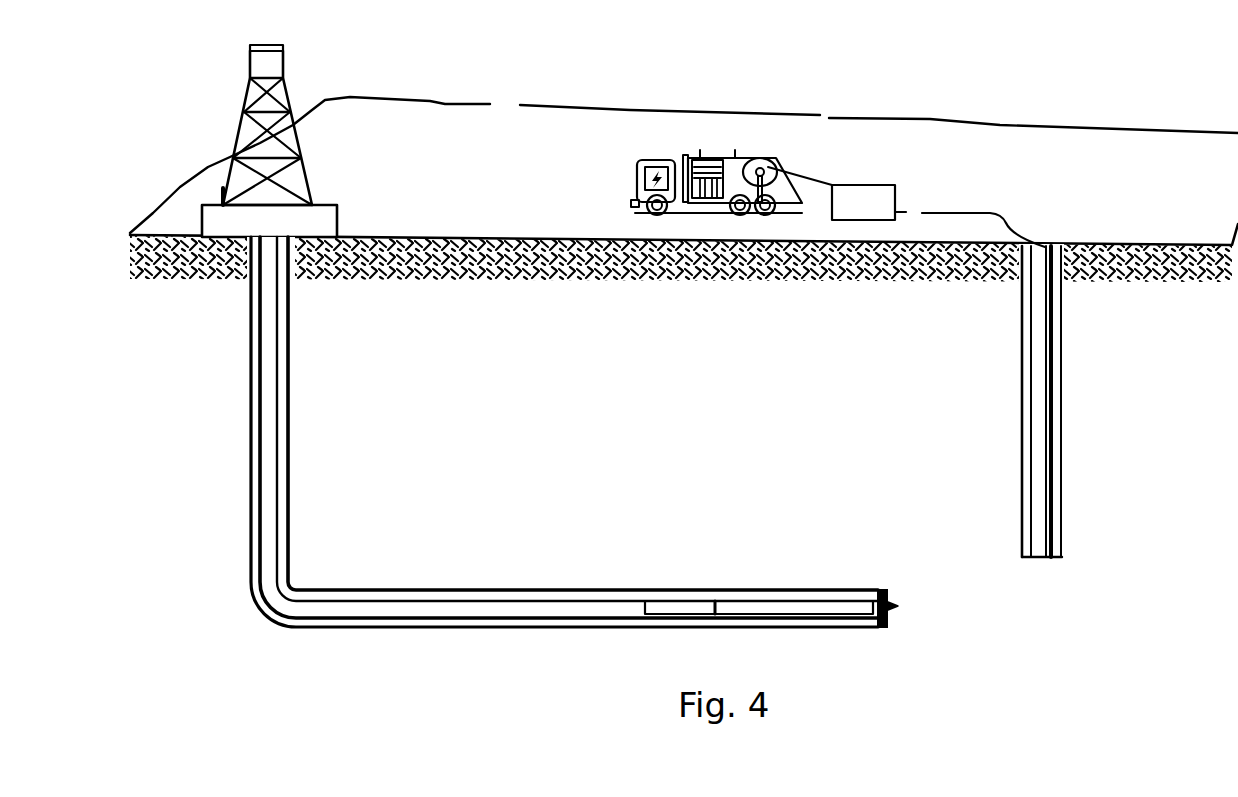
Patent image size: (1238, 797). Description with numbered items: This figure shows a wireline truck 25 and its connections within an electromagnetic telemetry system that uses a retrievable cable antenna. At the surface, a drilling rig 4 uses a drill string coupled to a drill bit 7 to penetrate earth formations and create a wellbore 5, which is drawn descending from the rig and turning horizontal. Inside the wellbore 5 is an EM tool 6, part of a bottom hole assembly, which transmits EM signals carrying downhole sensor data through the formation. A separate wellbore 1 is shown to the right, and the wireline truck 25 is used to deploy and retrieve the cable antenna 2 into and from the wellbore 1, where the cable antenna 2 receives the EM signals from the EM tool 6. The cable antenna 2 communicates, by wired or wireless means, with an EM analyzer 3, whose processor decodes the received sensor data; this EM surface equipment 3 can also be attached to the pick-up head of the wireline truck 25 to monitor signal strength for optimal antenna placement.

The wellbore 1 is at (1063, 538).
The cable antenna 2 is at (1006, 222).
The EM analyzer 3 is at (863, 185).
The drilling rig 4 is at (313, 217).
The wellbore 5 is at (293, 397).
The EM tool 6 is at (688, 605).
The drill bit 7 is at (898, 612).
The wireline truck 25 is at (715, 152).